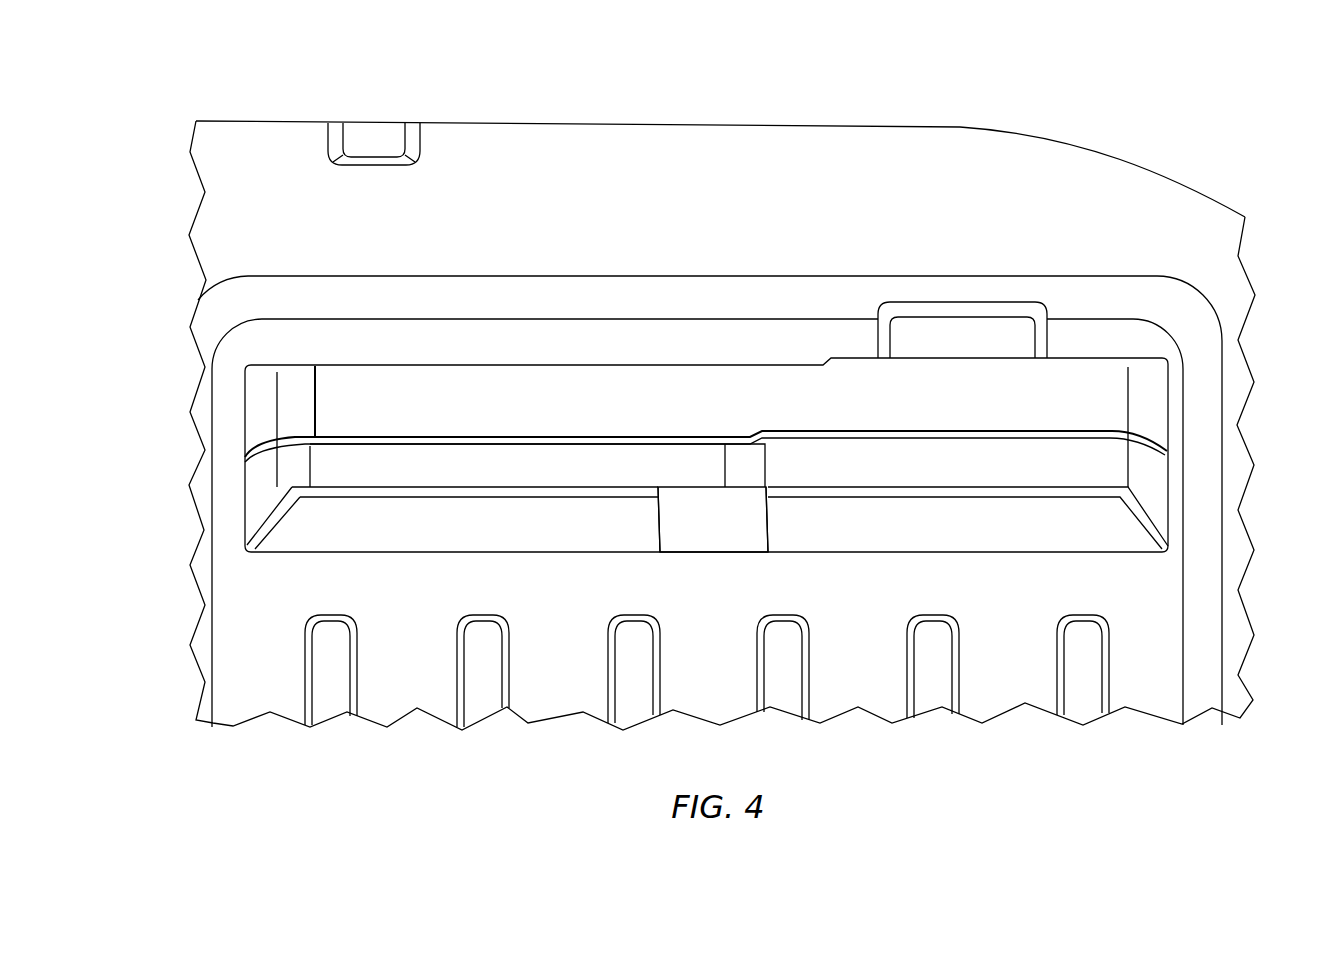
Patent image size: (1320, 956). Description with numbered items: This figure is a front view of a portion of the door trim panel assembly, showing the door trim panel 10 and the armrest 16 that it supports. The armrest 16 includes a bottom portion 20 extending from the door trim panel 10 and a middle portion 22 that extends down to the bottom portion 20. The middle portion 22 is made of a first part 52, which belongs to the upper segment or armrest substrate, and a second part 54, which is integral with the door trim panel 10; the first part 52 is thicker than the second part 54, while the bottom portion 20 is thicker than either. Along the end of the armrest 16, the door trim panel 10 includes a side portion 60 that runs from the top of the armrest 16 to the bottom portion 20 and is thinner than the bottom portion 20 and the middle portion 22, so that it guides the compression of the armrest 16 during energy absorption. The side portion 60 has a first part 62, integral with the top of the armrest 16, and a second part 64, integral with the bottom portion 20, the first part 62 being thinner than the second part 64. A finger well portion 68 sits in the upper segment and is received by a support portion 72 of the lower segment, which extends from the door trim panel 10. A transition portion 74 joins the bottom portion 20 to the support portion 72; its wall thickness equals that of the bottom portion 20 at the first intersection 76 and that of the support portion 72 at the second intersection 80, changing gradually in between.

The door trim panel 10 is at (397, 645).
The armrest 16 is at (1178, 436).
The bottom portion 20 is at (446, 537).
The middle portion 22 is at (491, 436).
The first part 52 is at (538, 419).
The second part 54 is at (538, 479).
The side portion 60 is at (230, 447).
The first part of the side portion 62 is at (258, 410).
The second part of the side portion 64 is at (258, 487).
The finger well portion 68 is at (978, 395).
The support portion 72 is at (940, 537).
The transition portion 74 is at (700, 537).
The first intersection 76 is at (657, 520).
The second intersection 80 is at (768, 521).